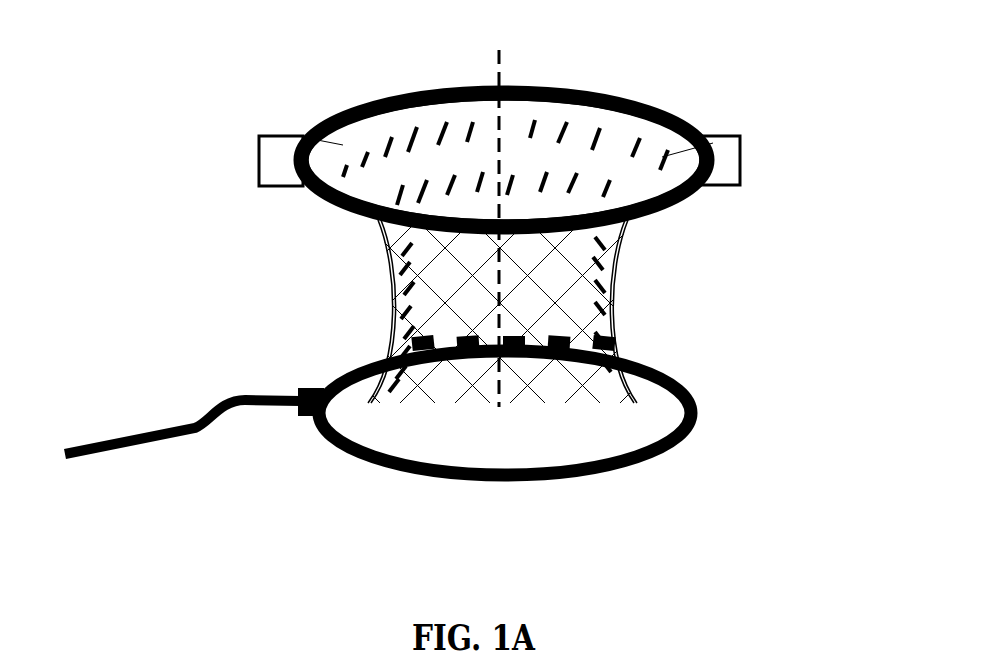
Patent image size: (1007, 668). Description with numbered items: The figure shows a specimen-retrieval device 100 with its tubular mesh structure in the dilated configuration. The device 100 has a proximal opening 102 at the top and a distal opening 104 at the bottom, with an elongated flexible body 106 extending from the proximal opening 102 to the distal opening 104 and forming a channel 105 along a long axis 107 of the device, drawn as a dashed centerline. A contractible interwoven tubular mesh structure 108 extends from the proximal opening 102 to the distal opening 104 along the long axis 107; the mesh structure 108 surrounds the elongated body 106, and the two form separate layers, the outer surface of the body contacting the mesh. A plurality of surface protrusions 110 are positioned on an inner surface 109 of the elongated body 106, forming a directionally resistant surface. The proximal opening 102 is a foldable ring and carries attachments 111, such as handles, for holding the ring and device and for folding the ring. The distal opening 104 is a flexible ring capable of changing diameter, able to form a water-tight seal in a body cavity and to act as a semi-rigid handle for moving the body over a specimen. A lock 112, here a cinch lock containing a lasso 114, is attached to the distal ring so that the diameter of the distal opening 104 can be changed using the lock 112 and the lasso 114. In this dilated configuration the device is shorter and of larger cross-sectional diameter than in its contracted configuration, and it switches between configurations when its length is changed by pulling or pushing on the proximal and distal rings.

The device 100 is at (142, 99).
The proximal opening 102 is at (539, 131).
The distal opening 104 is at (574, 413).
The channel 105 is at (487, 138).
The elongated flexible body 106 is at (452, 311).
The long axis 107 is at (563, 207).
The tubular mesh structure 108 is at (500, 310).
The inner surface 109 is at (431, 126).
The surface protrusions 110 is at (550, 236).
The attachments 111 is at (498, 150).
The lock 112 is at (266, 470).
The lasso 114 is at (181, 387).